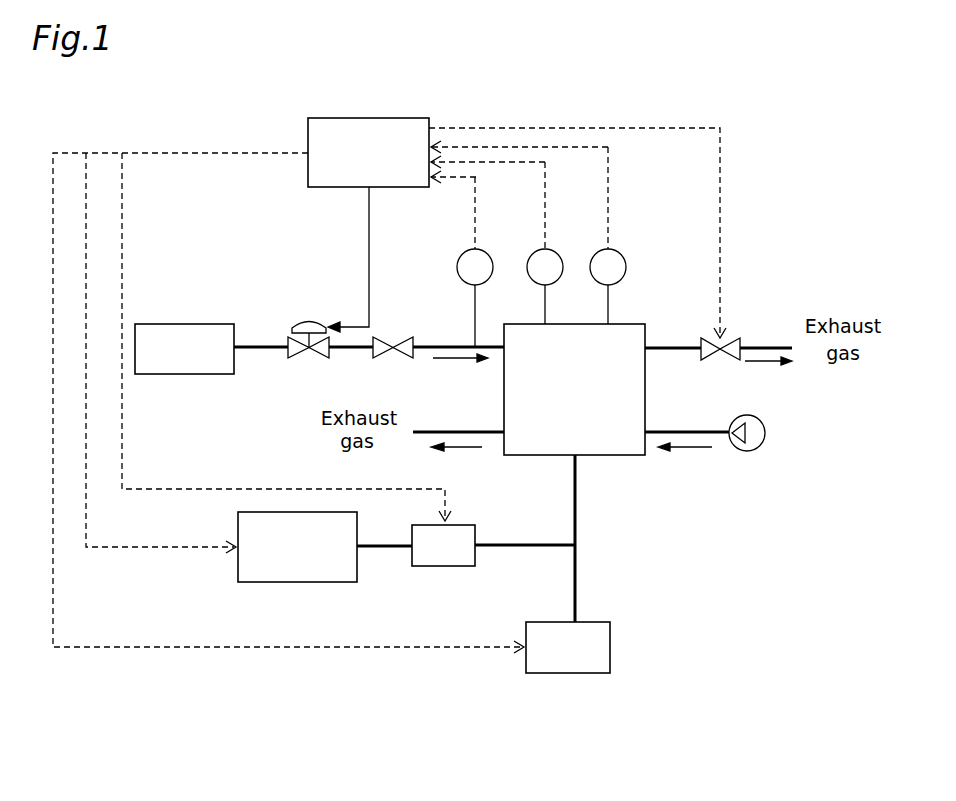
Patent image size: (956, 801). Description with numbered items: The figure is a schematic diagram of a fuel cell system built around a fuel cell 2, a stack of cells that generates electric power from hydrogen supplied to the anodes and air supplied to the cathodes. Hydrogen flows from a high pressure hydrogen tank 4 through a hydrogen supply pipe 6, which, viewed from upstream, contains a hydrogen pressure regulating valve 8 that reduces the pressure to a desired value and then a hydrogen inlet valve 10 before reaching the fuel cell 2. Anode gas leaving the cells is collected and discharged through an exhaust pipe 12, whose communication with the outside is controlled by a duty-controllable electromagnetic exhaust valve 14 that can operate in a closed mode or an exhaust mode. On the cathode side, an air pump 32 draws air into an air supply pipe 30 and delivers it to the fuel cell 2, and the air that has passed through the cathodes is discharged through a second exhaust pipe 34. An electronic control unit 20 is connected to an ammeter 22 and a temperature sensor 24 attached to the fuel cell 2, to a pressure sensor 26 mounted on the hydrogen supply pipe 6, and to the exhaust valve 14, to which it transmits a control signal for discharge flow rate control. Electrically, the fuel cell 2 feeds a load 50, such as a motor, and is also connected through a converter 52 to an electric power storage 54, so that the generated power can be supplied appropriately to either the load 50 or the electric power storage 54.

The fuel cell 2 is at (636, 324).
The high pressure hydrogen tank 4 is at (185, 324).
The hydrogen supply pipe 6 is at (430, 347).
The hydrogen pressure regulating valve 8 is at (306, 321).
The hydrogen inlet valve 10 is at (378, 337).
The exhaust pipe 12 is at (670, 348).
The exhaust valve 14 is at (731, 340).
The electronic control unit 20 is at (368, 118).
The ammeter 22 is at (595, 255).
The temperature sensor 24 is at (531, 255).
The pressure sensor 26 is at (459, 256).
The air supply pipe 30 is at (684, 432).
The air pump 32 is at (766, 431).
The exhaust pipe 34 is at (455, 432).
The load 50 is at (559, 674).
The converter 52 is at (447, 567).
The electric power storage 54 is at (267, 583).